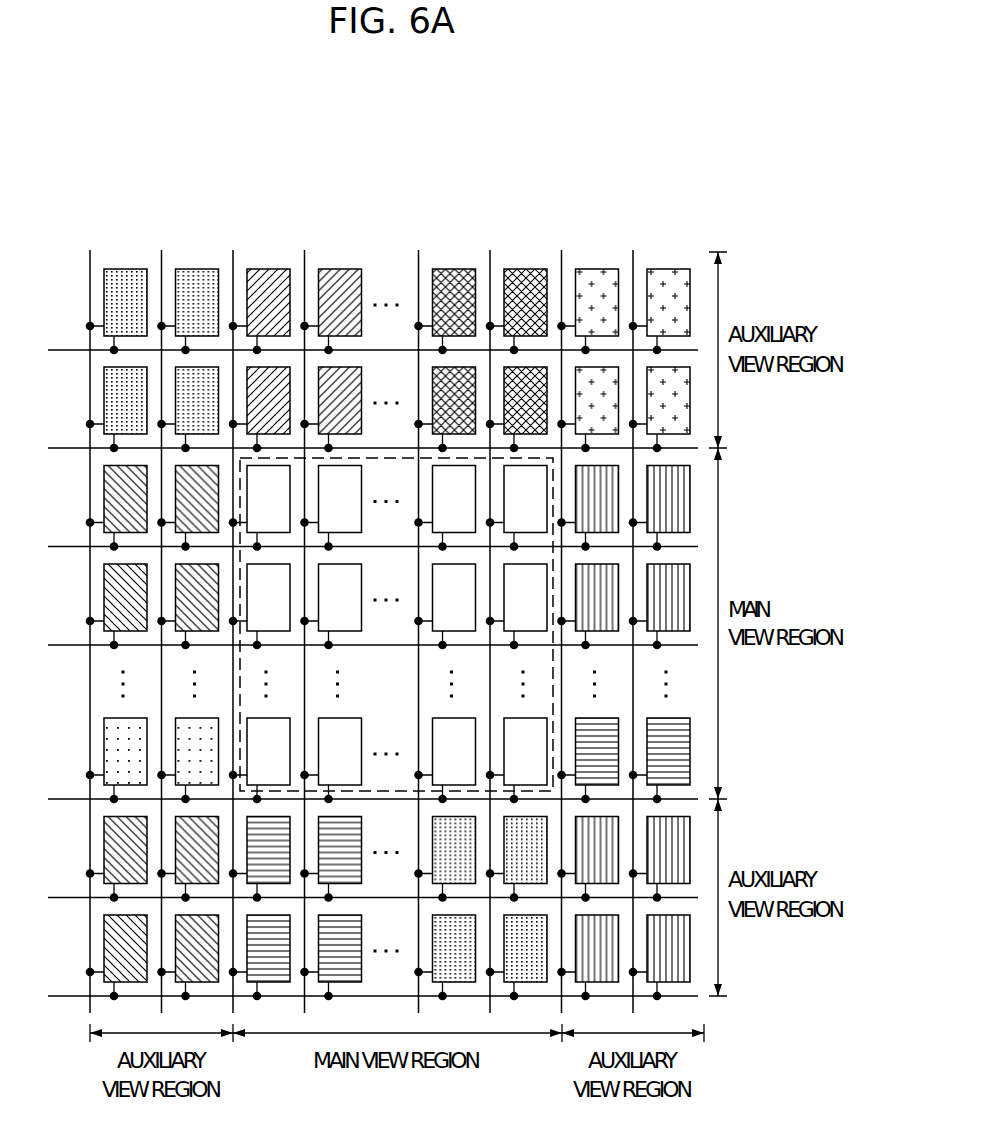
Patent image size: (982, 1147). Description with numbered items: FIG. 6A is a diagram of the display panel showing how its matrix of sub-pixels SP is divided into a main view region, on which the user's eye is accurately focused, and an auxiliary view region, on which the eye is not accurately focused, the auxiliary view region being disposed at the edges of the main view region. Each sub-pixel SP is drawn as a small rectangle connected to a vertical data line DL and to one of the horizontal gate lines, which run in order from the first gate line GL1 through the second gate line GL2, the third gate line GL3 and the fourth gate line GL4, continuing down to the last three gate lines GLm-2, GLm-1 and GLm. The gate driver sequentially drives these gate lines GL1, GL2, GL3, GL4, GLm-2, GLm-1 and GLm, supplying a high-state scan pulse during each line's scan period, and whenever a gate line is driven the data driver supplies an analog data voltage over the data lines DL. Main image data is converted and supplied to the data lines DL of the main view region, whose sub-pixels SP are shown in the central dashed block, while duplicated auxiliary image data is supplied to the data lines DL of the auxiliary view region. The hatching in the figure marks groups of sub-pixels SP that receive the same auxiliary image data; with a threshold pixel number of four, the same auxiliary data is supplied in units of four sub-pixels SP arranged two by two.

The data line DL is at (92, 618).
The first gate line GL1 is at (372, 336).
The second gate line GL2 is at (372, 434).
The third gate line GL3 is at (372, 533).
The fourth gate line GL4 is at (372, 631).
The (m-2)th gate line GLm-2 is at (361, 785).
The (m-1)th gate line GLm-1 is at (361, 884).
The m-th gate line GLm is at (372, 982).
The sub-pixel SP is at (281, 513).